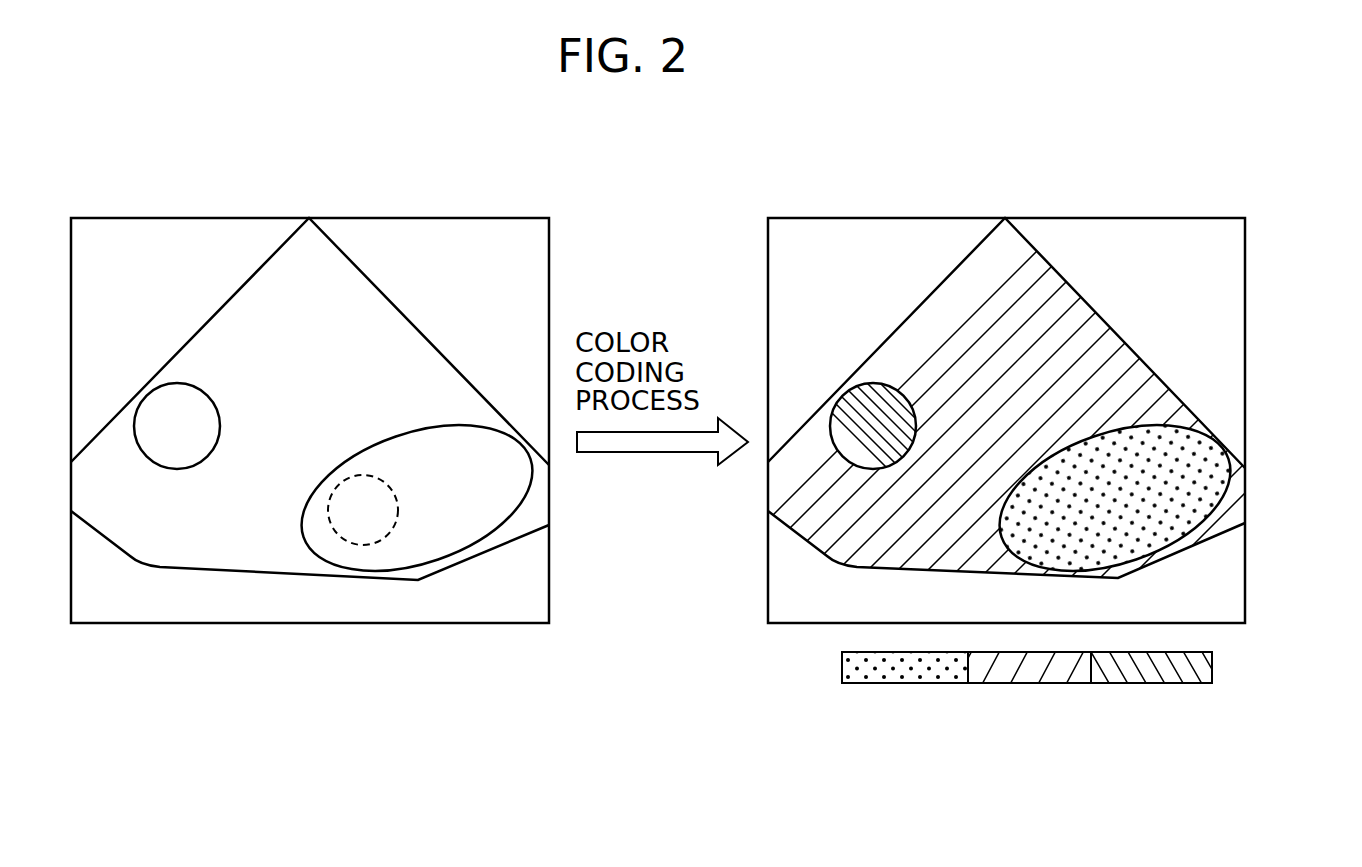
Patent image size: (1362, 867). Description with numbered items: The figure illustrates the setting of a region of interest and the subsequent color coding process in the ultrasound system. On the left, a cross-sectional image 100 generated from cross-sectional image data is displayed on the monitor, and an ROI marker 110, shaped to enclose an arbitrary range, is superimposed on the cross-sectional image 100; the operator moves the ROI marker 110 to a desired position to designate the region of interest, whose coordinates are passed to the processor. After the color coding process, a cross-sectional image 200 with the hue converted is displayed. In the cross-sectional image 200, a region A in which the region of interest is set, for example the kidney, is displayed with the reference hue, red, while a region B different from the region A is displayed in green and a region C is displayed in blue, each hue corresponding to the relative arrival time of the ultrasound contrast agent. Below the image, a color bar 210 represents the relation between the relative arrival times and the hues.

The cross-sectional image 100 is at (675, 418).
The ROI marker 110 is at (343, 543).
The cross-sectional image with hue converted 200 is at (1095, 255).
The color bar 210 is at (847, 698).
The region A is at (462, 527).
The region B is at (398, 342).
The region C is at (168, 408).